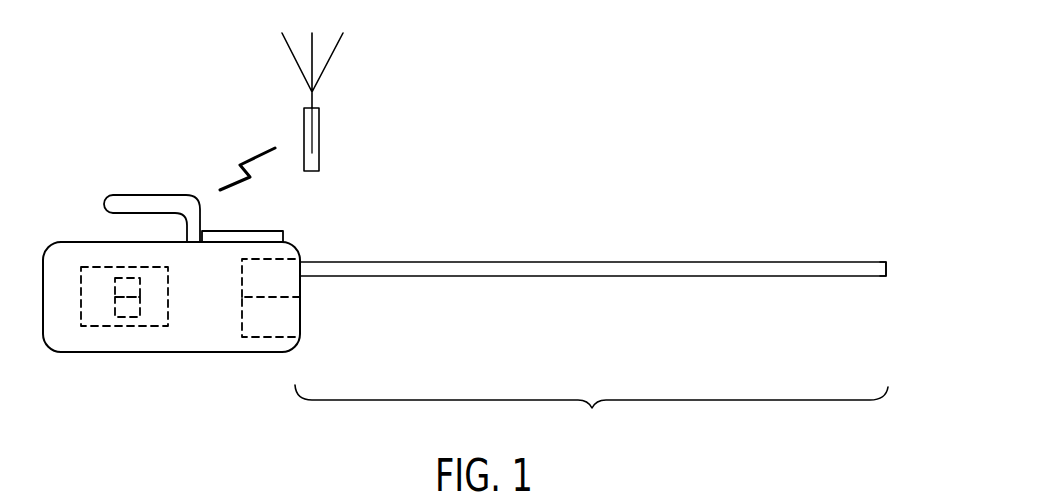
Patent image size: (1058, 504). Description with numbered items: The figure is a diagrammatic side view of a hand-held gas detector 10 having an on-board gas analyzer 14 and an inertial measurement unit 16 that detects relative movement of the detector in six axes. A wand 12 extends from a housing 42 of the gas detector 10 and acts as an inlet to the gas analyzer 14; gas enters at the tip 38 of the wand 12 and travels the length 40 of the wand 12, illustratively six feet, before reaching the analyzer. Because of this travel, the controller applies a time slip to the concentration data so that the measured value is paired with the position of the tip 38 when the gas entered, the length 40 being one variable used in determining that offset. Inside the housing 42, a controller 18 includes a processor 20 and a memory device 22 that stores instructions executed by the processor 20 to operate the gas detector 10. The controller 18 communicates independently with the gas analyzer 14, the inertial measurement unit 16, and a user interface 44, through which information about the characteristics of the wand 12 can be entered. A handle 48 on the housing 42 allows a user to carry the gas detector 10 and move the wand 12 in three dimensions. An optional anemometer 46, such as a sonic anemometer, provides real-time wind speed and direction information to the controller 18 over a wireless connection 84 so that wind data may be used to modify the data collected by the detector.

The gas detector 10 is at (357, 205).
The wand 12 is at (552, 258).
The gas analyzer 14 is at (287, 280).
The inertial measurement unit 16 is at (293, 320).
The controller 18 is at (92, 328).
The processor 20 is at (118, 278).
The memory device 22 is at (132, 317).
The tip 38 is at (898, 266).
The length 40 is at (591, 414).
The housing 42 is at (67, 242).
The user interface 44 is at (250, 240).
The anemometer 46 is at (357, 108).
The handle 48 is at (128, 206).
The wireless connection 84 is at (243, 162).